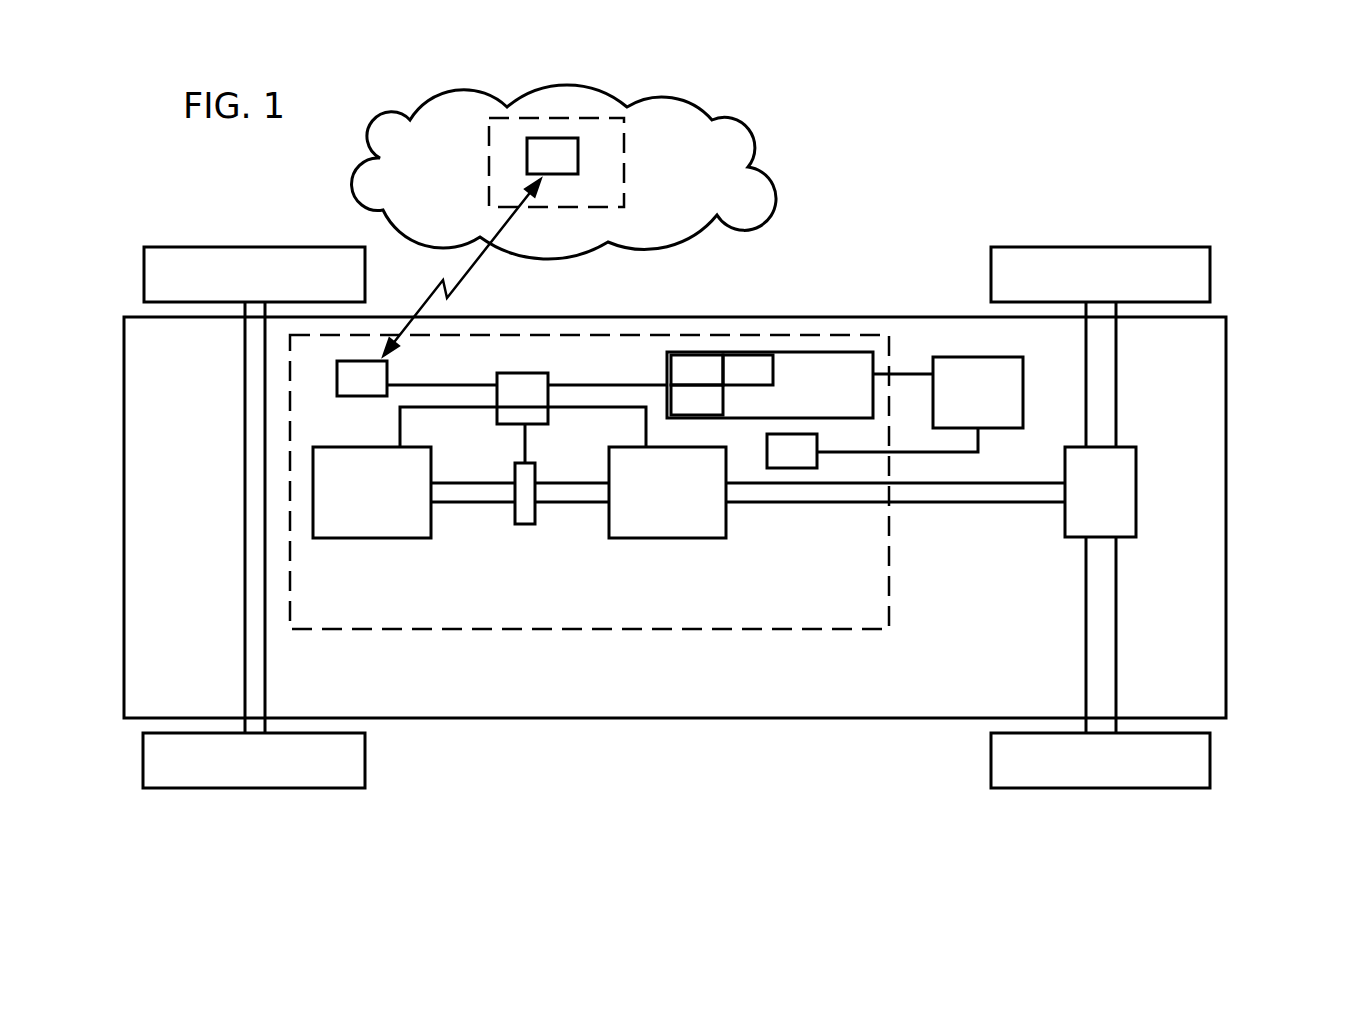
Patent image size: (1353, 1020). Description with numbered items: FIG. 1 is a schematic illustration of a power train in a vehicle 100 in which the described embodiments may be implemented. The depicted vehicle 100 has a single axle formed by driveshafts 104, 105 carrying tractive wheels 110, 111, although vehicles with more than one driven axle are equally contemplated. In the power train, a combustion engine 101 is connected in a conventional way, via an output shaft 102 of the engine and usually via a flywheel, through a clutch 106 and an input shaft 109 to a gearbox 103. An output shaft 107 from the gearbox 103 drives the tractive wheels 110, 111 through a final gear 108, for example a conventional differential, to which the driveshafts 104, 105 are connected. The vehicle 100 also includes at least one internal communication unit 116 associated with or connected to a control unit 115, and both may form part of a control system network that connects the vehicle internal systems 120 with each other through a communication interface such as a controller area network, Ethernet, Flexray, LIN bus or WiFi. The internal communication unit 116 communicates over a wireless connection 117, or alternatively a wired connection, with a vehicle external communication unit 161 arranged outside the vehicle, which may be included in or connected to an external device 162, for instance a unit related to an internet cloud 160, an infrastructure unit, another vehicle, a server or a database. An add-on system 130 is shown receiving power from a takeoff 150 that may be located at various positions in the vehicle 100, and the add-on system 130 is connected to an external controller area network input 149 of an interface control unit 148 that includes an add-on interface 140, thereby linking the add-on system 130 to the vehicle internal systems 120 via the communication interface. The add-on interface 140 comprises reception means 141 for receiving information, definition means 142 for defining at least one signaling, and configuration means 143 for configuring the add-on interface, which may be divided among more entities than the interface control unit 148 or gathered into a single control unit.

The vehicle 100 is at (1139, 140).
The combustion engine 101 is at (345, 527).
The output shaft 102 is at (463, 493).
The gearbox 103 is at (678, 517).
The driveshaft 104 is at (1105, 372).
The driveshaft 105 is at (1112, 642).
The clutch 106 is at (520, 512).
The output shaft 107 is at (988, 497).
The final gear 108 is at (1132, 487).
The input shaft 109 is at (563, 495).
The tractive wheel 110 is at (1207, 762).
The tractive wheel 111 is at (1207, 267).
The control unit 115 is at (523, 418).
The internal communication unit 116 is at (502, 378).
The wireless connection 117 is at (462, 267).
The vehicle internal system 120 is at (589, 482).
The add-on system 130 is at (978, 392).
The add-on interface 140 is at (800, 385).
The reception means 141 is at (697, 370).
The definition means 142 is at (748, 370).
The configuration means 143 is at (697, 400).
The interface control unit 148 is at (832, 352).
The external controller area network input 149 is at (875, 370).
The takeoff 150 is at (872, 448).
The internet cloud 160 is at (564, 172).
The vehicle external communication unit 161 is at (552, 156).
The external device 162 is at (556, 162).